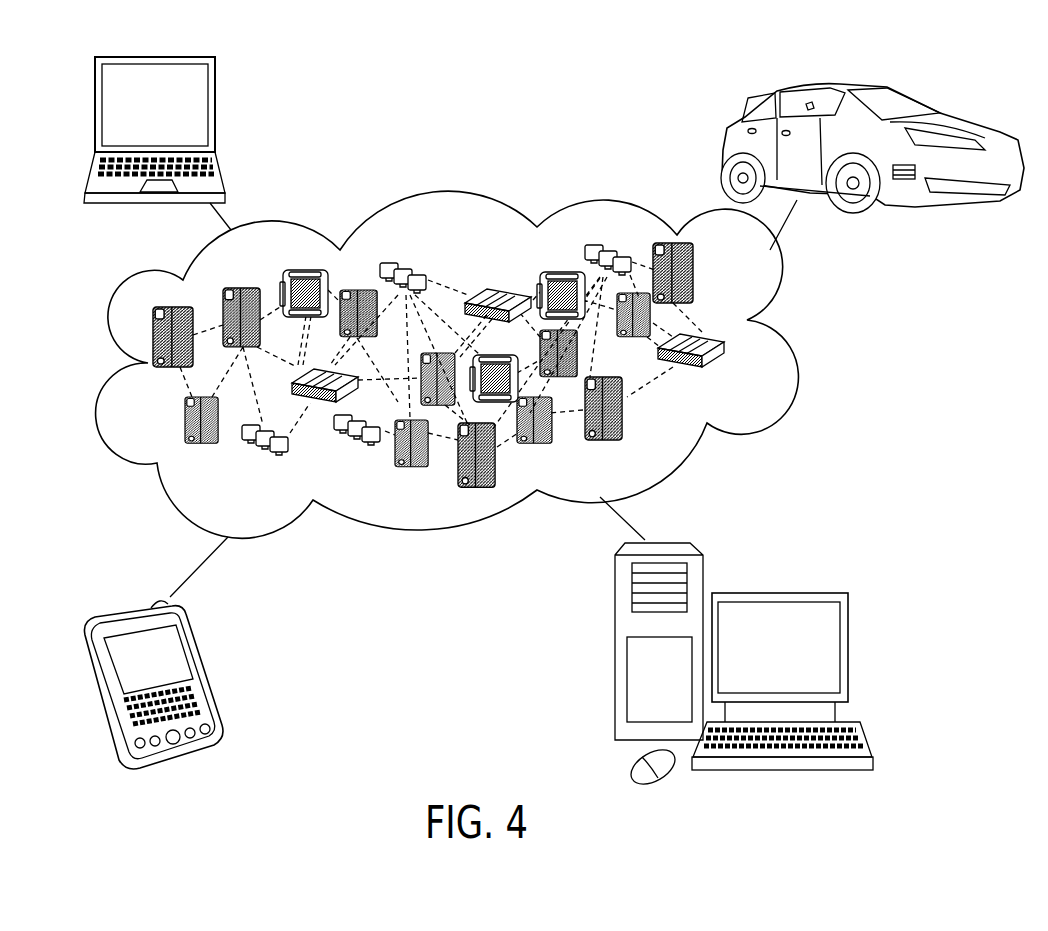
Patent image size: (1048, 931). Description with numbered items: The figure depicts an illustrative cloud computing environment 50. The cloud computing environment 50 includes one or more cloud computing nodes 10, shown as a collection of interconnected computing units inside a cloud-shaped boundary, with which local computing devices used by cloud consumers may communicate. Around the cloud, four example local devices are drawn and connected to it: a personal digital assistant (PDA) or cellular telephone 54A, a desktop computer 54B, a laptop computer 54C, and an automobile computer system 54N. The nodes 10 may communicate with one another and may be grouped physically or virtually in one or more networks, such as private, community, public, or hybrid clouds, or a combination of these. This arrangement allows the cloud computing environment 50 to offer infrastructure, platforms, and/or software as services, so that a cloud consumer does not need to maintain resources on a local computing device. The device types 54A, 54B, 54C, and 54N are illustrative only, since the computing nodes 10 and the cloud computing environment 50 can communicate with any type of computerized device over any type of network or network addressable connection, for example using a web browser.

The cloud computing nodes 10 is at (472, 364).
The cloud computing environment 50 is at (795, 353).
The personal digital assistant (PDA) or cellular telephone 54A is at (200, 668).
The desktop computer 54B is at (810, 593).
The laptop computer 54C is at (216, 122).
The automobile computer system 54N is at (925, 105).